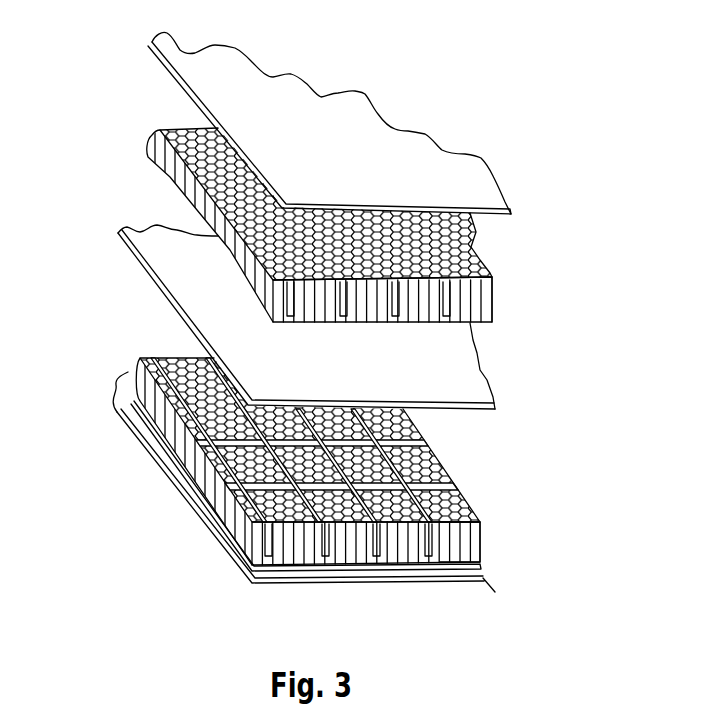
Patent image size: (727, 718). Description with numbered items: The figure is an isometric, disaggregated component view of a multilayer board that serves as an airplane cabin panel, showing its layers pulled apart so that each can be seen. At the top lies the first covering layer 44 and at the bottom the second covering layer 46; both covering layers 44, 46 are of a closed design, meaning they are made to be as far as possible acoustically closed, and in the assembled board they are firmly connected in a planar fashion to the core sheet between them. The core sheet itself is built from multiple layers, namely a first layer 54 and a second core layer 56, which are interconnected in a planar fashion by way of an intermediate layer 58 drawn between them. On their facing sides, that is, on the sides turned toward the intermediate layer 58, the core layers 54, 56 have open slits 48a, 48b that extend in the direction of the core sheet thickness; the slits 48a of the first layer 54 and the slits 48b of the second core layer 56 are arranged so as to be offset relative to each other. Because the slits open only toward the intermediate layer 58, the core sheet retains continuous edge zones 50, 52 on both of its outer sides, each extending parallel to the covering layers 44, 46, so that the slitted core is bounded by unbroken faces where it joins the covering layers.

The first covering layer 44 is at (180, 53).
The second covering layer 46 is at (147, 457).
The open slits 48a is at (369, 227).
The open slits 48b is at (352, 490).
The continuous edge zone 50 is at (423, 283).
The continuous edge zone 52 is at (398, 556).
The first layer 54 is at (490, 302).
The second core layer 56 is at (470, 543).
The intermediate layer 58 is at (143, 270).